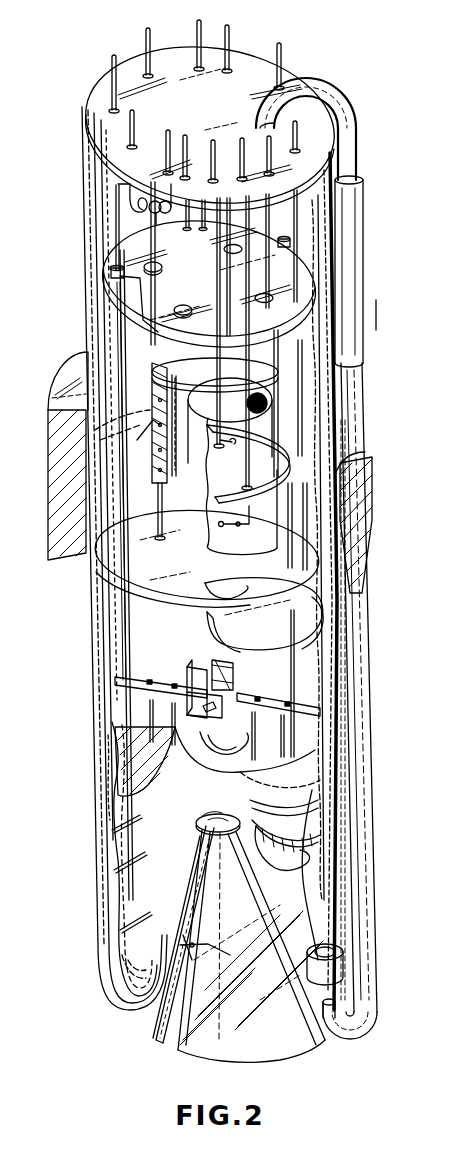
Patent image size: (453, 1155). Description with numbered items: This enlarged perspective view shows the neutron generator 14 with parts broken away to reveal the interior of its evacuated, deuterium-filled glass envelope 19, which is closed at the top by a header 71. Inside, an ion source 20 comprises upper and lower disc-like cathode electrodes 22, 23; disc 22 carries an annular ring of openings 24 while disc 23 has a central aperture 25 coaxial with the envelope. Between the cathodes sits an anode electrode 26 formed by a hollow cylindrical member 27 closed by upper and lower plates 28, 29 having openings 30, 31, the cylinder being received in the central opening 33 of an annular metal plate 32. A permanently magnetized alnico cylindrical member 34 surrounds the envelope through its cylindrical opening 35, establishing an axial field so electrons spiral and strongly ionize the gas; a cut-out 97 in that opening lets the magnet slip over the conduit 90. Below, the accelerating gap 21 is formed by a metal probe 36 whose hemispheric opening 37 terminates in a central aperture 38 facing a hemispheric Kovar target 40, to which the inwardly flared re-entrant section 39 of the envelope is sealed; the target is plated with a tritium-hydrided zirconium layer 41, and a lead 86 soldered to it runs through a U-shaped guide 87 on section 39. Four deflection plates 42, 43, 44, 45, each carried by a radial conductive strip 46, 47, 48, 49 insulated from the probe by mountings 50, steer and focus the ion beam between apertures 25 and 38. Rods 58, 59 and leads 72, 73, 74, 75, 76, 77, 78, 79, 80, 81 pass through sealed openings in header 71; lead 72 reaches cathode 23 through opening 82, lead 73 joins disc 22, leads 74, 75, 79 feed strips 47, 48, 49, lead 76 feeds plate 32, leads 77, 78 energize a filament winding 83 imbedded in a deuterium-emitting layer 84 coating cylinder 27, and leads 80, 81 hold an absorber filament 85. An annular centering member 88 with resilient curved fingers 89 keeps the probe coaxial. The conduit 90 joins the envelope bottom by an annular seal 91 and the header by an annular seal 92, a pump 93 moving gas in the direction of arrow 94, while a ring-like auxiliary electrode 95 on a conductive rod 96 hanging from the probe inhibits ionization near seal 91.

The neutron generator 14 is at (95, 906).
The evacuated envelope 19 is at (100, 940).
The ion source 20 is at (120, 527).
The accelerating gap 21 is at (118, 830).
The upper cathode electrode 22 is at (160, 330).
The lower cathode electrode 23 is at (183, 592).
The openings 24 is at (184, 306).
The central aperture 25 is at (242, 582).
The anode electrode 26 is at (237, 469).
The hollow cylindrical member 27 is at (155, 398).
The upper plate 28 is at (158, 364).
The lower plate 29 is at (172, 512).
The opening 30 is at (167, 432).
The opening 31 is at (198, 487).
The annular metal plate 32 is at (115, 410).
The central opening 33 is at (148, 432).
The cylindrical magnetic member 34 is at (52, 406).
The cylindrical opening 35 is at (72, 382).
The metal probe 36 is at (100, 792).
The hemispheric opening 37 is at (150, 775).
The central aperture 38 is at (206, 755).
The re-entrant tubular section 39 is at (185, 918).
The metal target 40 is at (200, 836).
The layer 41 is at (150, 830).
The deflection plate 42 is at (190, 678).
The deflection plate 43 is at (213, 664).
The deflection plate 44 is at (248, 697).
The deflection plate 45 is at (180, 715).
The conductive strip 46 is at (165, 674).
The conductive strip 47 is at (256, 678).
The conductive strip 48 is at (284, 728).
The conductive strip 49 is at (201, 714).
The mountings 50 is at (163, 712).
The rod 58 is at (110, 88).
The rod 59 is at (281, 68).
The header 71 is at (210, 108).
The lead 72 is at (146, 48).
The lead 73 is at (197, 40).
The lead 74 is at (229, 45).
The lead 75 is at (297, 142).
The lead 76 is at (272, 147).
The lead 77 is at (242, 152).
The lead 78 is at (212, 155).
The lead 79 is at (169, 148).
The lead 80 is at (182, 155).
The lead 81 is at (130, 130).
The opening 82 is at (142, 245).
The filament winding 83 is at (169, 472).
The layer of deuterium-emitting material 84 is at (168, 445).
The filament 85 is at (158, 230).
The lead 86 is at (156, 1018).
The U-shaped guide 87 is at (200, 950).
The annular centering member 88 is at (100, 770).
The curved fingers 89 is at (304, 840).
The conduit 90 is at (368, 898).
The annular seal 91 is at (330, 1042).
The annular seal 92 is at (264, 124).
The pump 93 is at (360, 245).
The arrow 94 is at (380, 273).
The auxiliary ring-like electrode 95 is at (310, 956).
The conductive rod 96 is at (312, 890).
The cut-out 97 is at (364, 460).